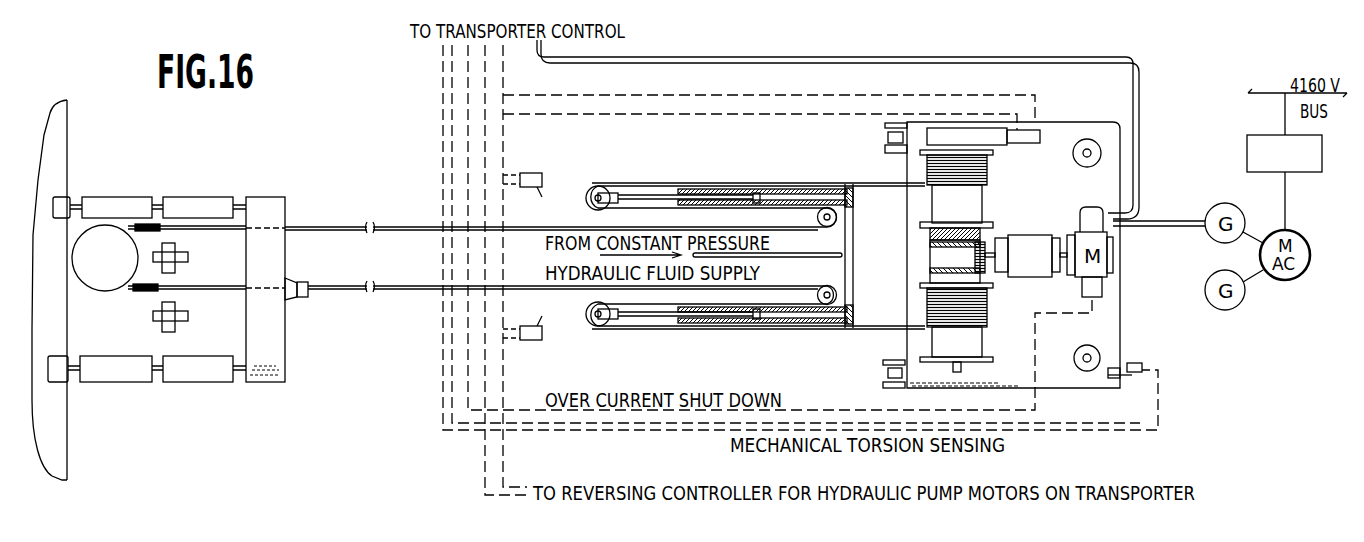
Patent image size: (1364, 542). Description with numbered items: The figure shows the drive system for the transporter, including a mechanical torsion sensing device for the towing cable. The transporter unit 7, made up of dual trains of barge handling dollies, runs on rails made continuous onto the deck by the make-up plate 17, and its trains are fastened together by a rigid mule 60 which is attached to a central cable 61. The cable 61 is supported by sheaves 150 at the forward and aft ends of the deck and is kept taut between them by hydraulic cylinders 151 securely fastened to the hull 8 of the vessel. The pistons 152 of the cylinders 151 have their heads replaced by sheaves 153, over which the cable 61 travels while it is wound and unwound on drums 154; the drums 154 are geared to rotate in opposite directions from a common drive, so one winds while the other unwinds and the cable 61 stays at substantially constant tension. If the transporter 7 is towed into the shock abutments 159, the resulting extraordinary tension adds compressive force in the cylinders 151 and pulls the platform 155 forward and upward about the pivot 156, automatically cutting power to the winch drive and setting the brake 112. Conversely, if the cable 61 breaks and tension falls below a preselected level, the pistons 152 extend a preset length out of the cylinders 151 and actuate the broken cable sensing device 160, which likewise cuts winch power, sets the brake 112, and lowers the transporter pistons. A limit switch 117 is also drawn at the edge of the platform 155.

The transporter unit 7 is at (223, 376).
The hull 8 is at (883, 274).
The make-up plate 17 is at (56, 178).
The rigid mule 60 is at (275, 334).
The cable 61 is at (340, 227).
The winch drive brake 112 is at (1000, 142).
The limit switch 117 is at (1138, 363).
The sheave 150 is at (105, 240).
The hydraulic cylinder 151 is at (793, 188).
The piston 152 is at (656, 193).
The sheave 153 is at (600, 188).
The drum 154 is at (982, 221).
The platform 155 is at (1060, 390).
The pivot 156 is at (893, 390).
The shock abutment 159 is at (180, 267).
The broken cable sensing device 160 is at (537, 173).